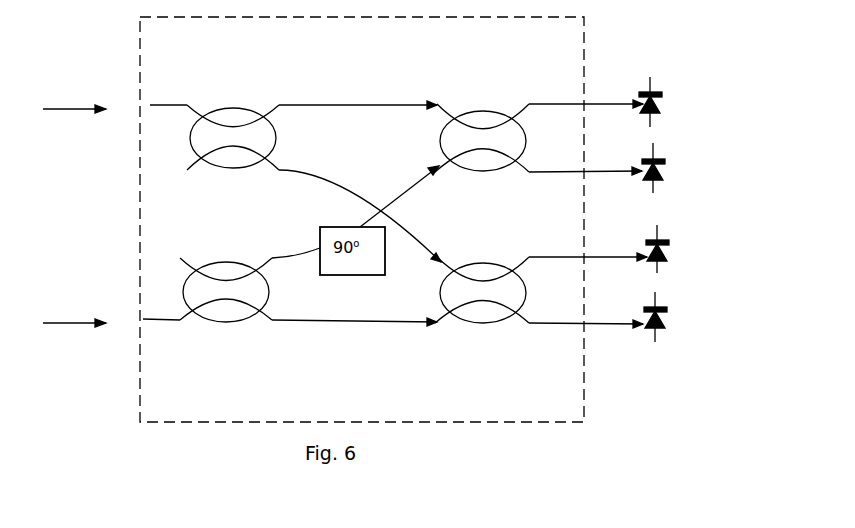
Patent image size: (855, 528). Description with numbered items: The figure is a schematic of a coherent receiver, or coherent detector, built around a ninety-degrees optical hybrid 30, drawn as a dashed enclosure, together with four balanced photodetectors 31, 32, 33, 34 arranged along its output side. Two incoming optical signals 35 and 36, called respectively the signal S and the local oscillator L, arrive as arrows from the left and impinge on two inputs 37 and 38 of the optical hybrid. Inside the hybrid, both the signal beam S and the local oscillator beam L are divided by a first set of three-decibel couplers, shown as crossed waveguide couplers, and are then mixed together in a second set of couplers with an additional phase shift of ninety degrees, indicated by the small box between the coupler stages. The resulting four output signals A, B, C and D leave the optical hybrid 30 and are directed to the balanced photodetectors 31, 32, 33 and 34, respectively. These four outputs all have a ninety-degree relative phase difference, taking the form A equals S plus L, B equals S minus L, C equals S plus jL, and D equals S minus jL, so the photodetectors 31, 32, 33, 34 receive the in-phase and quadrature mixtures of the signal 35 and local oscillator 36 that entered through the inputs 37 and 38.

The 90-degrees optical hybrid 30 is at (362, 219).
The balanced photodetector 31 is at (619, 102).
The balanced photodetector 32 is at (620, 168).
The balanced photodetector 33 is at (623, 249).
The balanced photodetector 34 is at (623, 317).
The incoming optical signal 35 is at (54, 109).
The incoming optical signal 36 is at (54, 323).
The input 37 is at (167, 88).
The input 38 is at (161, 337).